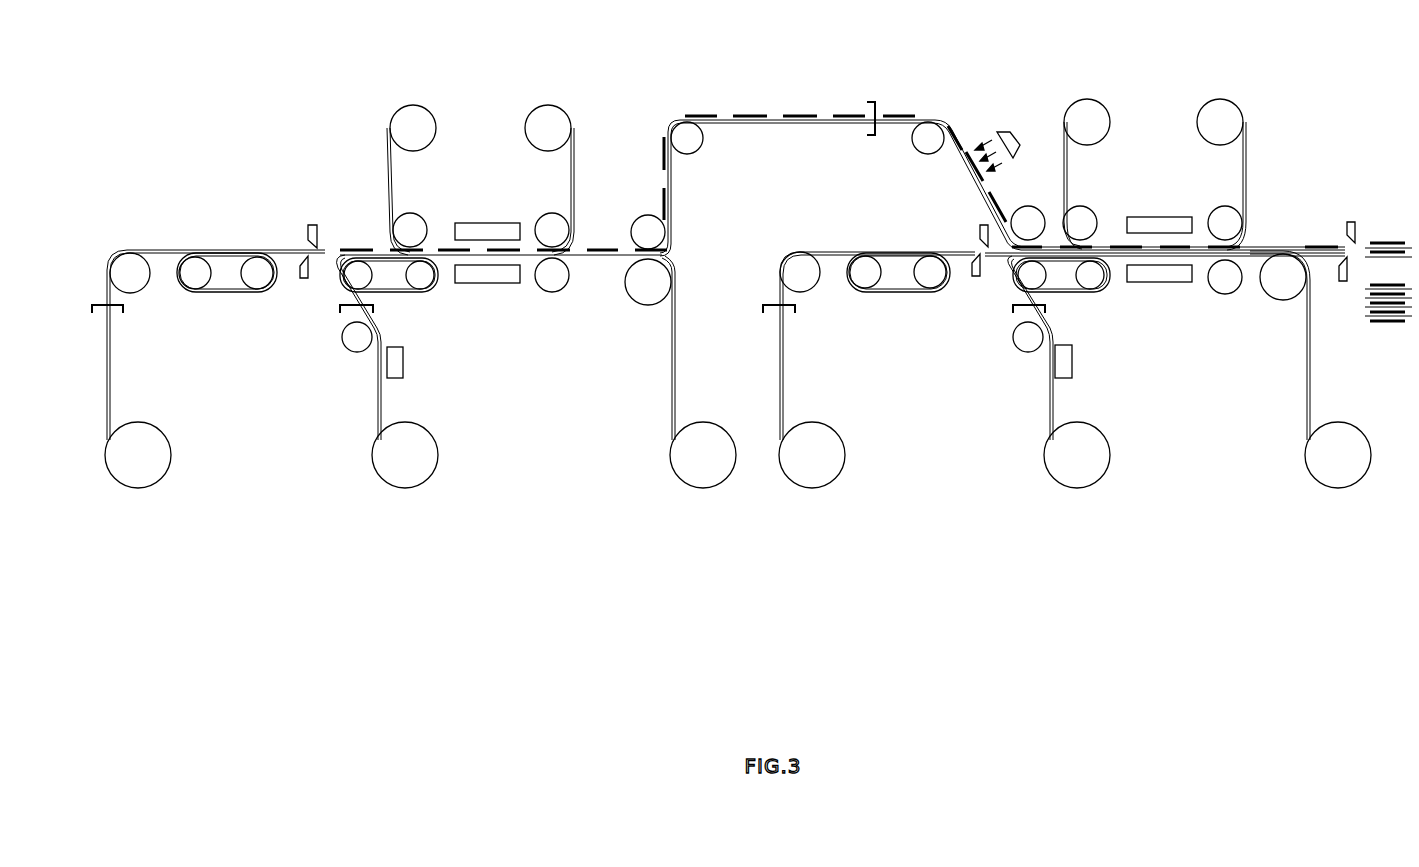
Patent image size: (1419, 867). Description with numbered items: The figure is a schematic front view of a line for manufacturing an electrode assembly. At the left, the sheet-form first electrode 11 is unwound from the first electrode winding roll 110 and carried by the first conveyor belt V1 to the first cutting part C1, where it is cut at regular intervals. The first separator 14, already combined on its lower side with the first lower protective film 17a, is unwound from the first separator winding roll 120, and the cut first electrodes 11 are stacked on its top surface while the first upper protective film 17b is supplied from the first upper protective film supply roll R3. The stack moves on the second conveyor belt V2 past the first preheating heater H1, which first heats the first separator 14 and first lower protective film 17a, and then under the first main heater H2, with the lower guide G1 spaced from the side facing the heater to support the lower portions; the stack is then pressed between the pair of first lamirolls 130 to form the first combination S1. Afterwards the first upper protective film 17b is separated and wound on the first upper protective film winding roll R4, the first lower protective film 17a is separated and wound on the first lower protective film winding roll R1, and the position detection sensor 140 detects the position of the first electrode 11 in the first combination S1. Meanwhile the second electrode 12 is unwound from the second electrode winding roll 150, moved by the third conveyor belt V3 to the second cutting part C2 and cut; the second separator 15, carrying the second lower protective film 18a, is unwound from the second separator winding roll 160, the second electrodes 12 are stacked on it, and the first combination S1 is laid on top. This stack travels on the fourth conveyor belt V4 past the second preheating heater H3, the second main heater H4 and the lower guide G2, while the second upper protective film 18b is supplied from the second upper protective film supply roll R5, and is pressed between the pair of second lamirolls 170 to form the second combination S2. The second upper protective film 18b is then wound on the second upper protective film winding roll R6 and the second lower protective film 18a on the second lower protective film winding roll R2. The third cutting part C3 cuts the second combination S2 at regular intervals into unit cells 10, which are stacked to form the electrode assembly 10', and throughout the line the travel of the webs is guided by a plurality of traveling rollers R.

The first electrode winding roll 110 is at (138, 488).
The first separator winding roll 120 is at (405, 488).
The pair of first lamirolls 130 is at (552, 278).
The position detection sensor 140 is at (1020, 135).
The second electrode winding roll 150 is at (812, 488).
The second separator winding roll 160 is at (1077, 488).
The pair of second lamirolls 170 is at (1225, 280).
The first lower protective film winding roll R1 is at (703, 488).
The second lower protective film winding roll R2 is at (1338, 488).
The first upper protective film supply roll R3 is at (413, 105).
The first upper protective film winding roll R4 is at (548, 105).
The second upper protective film supply roll R5 is at (1087, 99).
The second upper protective film winding roll R6 is at (1220, 99).
The traveling rollers R is at (928, 138).
The first cutting part C1 is at (312, 220).
The second cutting part C2 is at (975, 284).
The third cutting part C3 is at (1350, 218).
The first combination S1 is at (660, 153).
The second combination S2 is at (1323, 241).
The first preheating heater H1 is at (403, 362).
The first main heater H2 is at (487, 223).
The second preheating heater H3 is at (1072, 362).
The second main heater H4 is at (1160, 217).
The lower guide G1 is at (487, 283).
The lower guide G2 is at (1160, 282).
The first conveyor belt V1 is at (228, 292).
The second conveyor belt V2 is at (430, 292).
The third conveyor belt V3 is at (900, 292).
The fourth conveyor belt V4 is at (1095, 292).
The first electrode 11 is at (357, 247).
The second electrode 12 is at (1010, 256).
The first separator 14 is at (372, 422).
The second separator 15 is at (1045, 422).
The first lower protective film 17a is at (380, 393).
The first upper protective film 17b is at (392, 185).
The second lower protective film 18a is at (1052, 395).
The second upper protective film 18b is at (1066, 178).
The unit cell 10 is at (1390, 212).
The electrode assembly 10' is at (1387, 342).